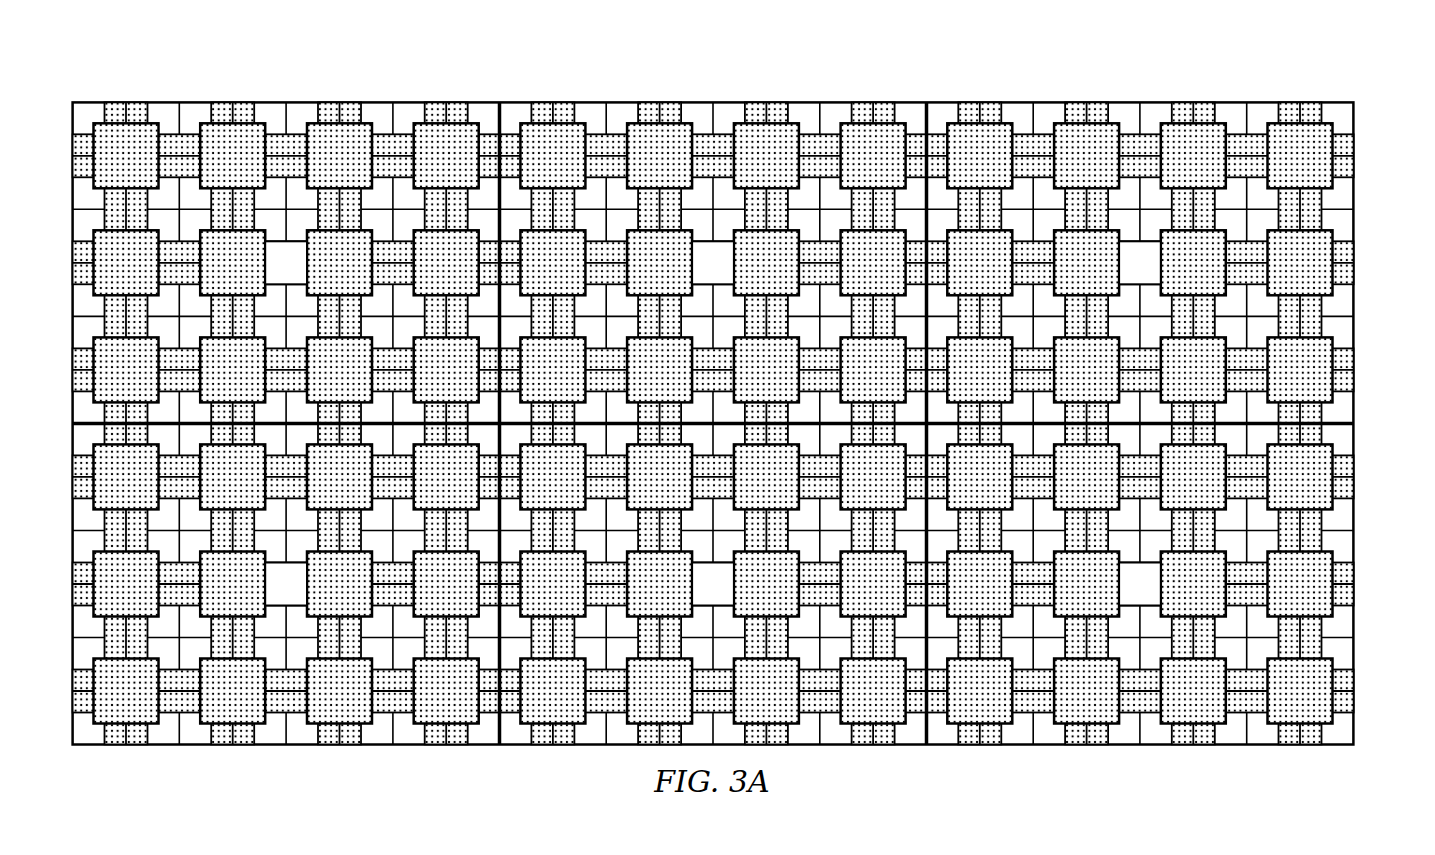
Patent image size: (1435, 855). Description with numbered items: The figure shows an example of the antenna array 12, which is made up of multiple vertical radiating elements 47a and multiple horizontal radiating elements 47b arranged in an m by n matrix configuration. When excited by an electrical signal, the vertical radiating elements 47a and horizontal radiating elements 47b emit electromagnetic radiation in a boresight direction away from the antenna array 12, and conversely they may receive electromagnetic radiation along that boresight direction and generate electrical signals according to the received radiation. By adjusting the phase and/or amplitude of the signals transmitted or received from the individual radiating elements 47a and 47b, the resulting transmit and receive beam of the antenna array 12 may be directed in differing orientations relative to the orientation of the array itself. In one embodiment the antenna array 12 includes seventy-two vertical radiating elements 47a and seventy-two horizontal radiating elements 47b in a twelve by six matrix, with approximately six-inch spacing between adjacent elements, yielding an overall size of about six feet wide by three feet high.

The antenna array 12 is at (749, 406).
The vertical radiating elements 47a is at (1338, 209).
The horizontal radiating elements 47b is at (378, 210).